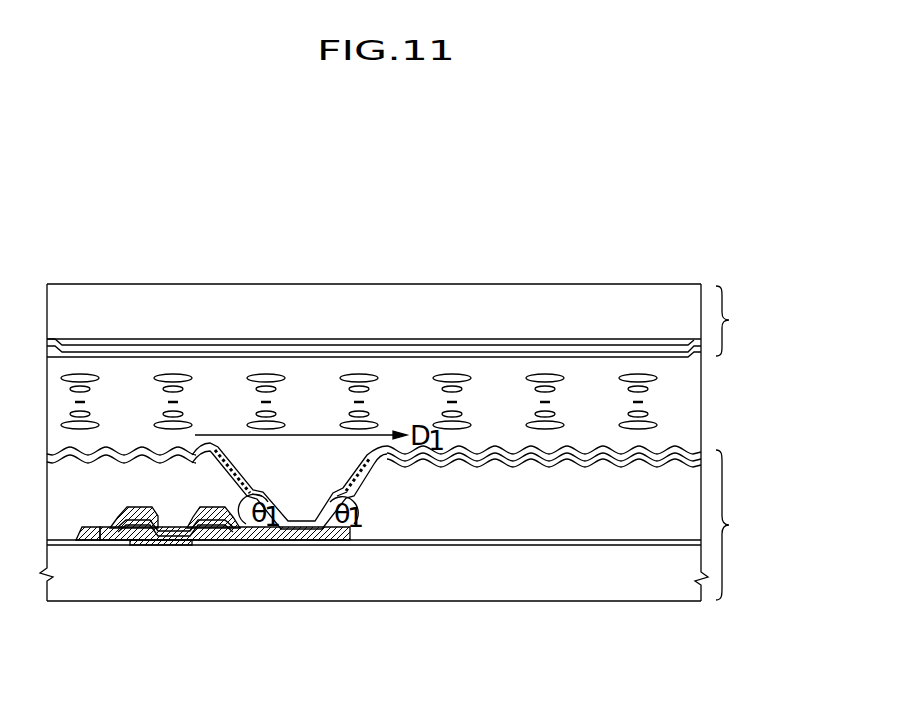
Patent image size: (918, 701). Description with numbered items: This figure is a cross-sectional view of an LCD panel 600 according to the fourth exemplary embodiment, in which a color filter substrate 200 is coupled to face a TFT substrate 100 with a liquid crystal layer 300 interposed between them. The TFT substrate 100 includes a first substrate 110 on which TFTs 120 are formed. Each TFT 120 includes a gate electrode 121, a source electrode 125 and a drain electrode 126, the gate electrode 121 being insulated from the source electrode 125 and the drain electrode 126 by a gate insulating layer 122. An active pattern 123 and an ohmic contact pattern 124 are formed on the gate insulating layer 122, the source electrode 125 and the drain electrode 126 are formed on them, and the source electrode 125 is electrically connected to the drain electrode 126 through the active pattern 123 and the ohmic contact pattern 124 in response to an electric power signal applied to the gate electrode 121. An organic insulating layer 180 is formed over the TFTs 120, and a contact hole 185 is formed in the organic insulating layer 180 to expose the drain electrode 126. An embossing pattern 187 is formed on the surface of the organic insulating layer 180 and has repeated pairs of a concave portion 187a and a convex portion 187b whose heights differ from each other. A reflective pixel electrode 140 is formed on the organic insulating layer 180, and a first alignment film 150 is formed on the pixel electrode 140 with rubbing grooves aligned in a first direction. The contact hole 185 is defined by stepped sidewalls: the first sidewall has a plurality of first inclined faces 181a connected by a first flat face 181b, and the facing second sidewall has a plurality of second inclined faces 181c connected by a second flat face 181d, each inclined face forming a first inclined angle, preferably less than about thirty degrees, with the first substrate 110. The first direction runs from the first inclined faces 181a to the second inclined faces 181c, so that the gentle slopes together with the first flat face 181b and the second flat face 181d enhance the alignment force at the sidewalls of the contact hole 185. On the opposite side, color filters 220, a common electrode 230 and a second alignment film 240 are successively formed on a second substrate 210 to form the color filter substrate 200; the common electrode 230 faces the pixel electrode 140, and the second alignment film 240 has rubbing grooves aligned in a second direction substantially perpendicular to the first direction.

The LCD panel 600 is at (423, 150).
The TFT substrate 100 is at (750, 525).
The first substrate 110 is at (392, 577).
The TFT 120 is at (202, 601).
The gate electrode 121 is at (180, 545).
The gate insulating layer 122 is at (137, 545).
The active pattern 123 is at (125, 545).
The ohmic contact pattern 124 is at (213, 541).
The source electrode 125 is at (80, 545).
The drain electrode 126 is at (274, 578).
The pixel electrode 140 is at (490, 463).
The first alignment film 150 is at (657, 453).
The organic insulating layer 180 is at (437, 518).
The first inclined faces 181a is at (245, 480).
The first flat face 181b is at (261, 490).
The second inclined faces 181c is at (372, 470).
The second flat face 181d is at (343, 487).
The contact hole 185 is at (303, 447).
The embossing pattern 187 is at (544, 574).
The concave portion 187a is at (540, 467).
The convex portion 187b is at (557, 463).
The color filter substrate 200 is at (750, 321).
The second substrate 210 is at (591, 296).
The color filters 220 is at (522, 342).
The common electrode 230 is at (439, 345).
The second alignment film 240 is at (350, 352).
The liquid crystal layer 300 is at (690, 412).